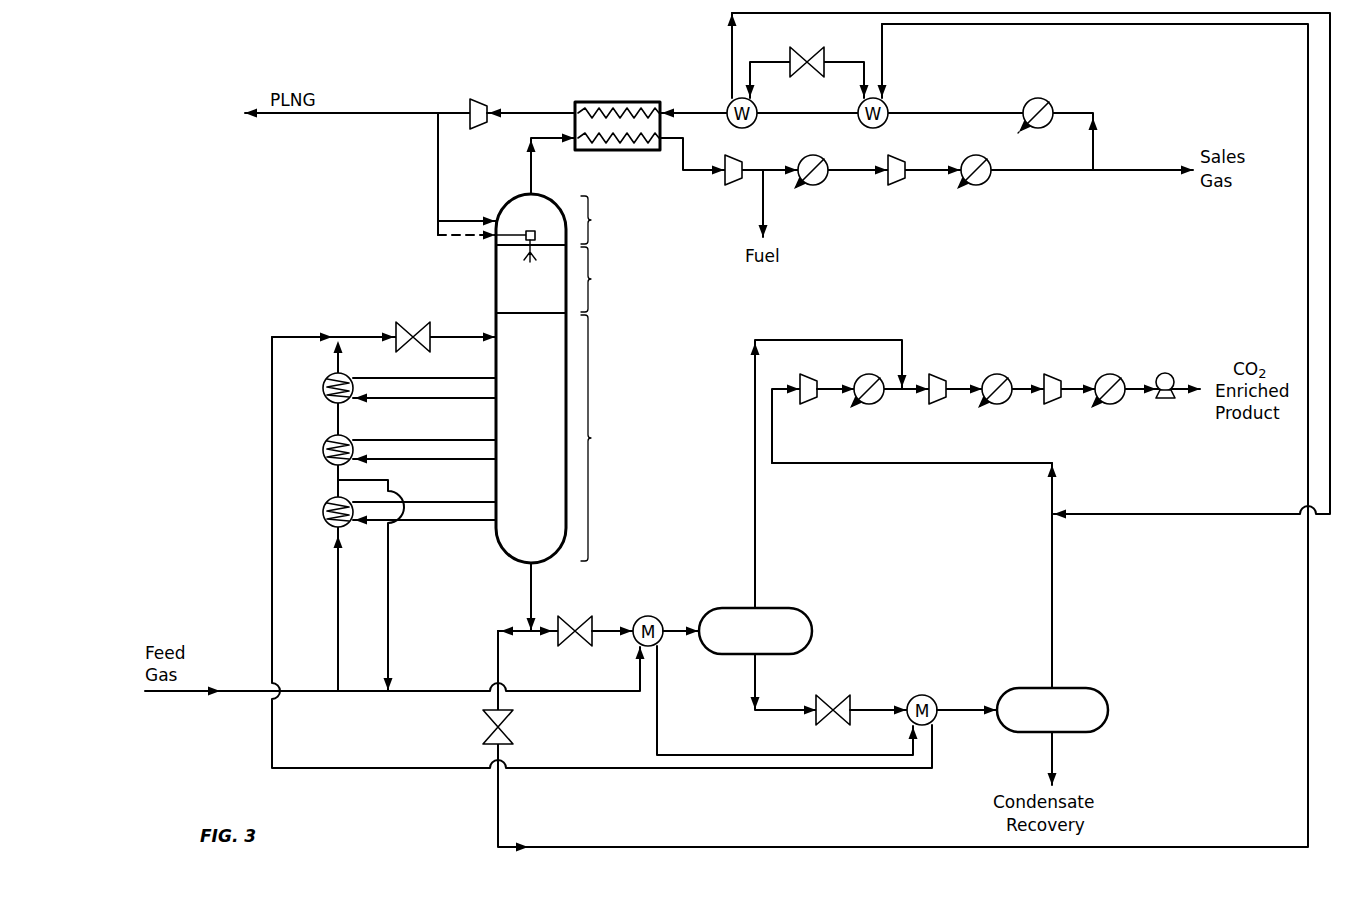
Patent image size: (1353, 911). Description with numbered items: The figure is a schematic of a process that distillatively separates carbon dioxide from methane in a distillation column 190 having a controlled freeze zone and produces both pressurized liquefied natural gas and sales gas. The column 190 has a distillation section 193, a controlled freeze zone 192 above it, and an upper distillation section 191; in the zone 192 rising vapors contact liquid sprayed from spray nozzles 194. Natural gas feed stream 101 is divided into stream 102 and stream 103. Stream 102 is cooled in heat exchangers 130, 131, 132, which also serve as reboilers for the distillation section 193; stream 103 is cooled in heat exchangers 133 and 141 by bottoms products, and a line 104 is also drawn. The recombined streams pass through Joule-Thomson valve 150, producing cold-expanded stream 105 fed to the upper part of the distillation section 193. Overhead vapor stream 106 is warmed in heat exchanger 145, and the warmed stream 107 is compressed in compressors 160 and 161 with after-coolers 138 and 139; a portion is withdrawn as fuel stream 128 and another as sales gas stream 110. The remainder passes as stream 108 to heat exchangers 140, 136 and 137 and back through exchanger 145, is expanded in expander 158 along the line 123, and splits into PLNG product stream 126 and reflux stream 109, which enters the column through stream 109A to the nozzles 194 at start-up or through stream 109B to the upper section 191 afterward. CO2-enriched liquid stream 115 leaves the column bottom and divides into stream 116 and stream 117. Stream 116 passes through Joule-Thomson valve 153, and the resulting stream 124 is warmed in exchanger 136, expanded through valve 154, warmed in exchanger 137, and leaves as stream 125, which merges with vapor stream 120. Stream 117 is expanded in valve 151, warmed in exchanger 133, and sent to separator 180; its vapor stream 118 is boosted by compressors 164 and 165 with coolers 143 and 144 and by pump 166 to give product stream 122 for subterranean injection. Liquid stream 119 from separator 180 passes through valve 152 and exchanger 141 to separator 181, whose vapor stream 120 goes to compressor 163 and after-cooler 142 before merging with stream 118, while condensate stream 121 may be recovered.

The natural gas feed stream 101 is at (188, 700).
The feed stream portion 102 is at (336, 602).
The feed stream portion 103 is at (356, 700).
The bypass stream 104 is at (394, 577).
The cold-expanded stream 105 is at (440, 336).
The overhead vapor stream 106 is at (528, 182).
The warmed vapor stream 107 is at (682, 158).
The recycle stream 108 is at (1071, 110).
The reflux stream 109 is at (428, 170).
The start-up reflux stream 109A is at (448, 228).
The upper section reflux stream 109B is at (448, 220).
The sales gas stream 110 is at (1116, 162).
The CO2-enriched liquid product stream 115 is at (526, 601).
The bottoms stream portion 116 is at (509, 630).
The bottoms stream portion 117 is at (549, 637).
The separator vapor stream 118 is at (748, 482).
The separator liquid stream 119 is at (748, 667).
The separator vapor stream 120 is at (1058, 584).
The condensate stream 121 is at (1058, 762).
The product stream 122 is at (1178, 398).
The recycle gas stream 123 is at (702, 112).
The expanded bottoms stream 124 is at (494, 816).
The warmed bottoms stream 125 is at (1176, 516).
The PLNG product stream 126 is at (376, 110).
The fuel stream 128 is at (770, 202).
The heat exchanger 130 is at (326, 505).
The heat exchanger 131 is at (326, 442).
The heat exchanger 132 is at (326, 380).
The heat exchanger 133 is at (636, 615).
The heat exchanger 136 is at (888, 128).
The heat exchanger 137 is at (752, 128).
The after-cooler 138 is at (825, 186).
The after-cooler 139 is at (990, 186).
The heat exchanger 140 is at (1046, 131).
The heat exchanger 141 is at (913, 690).
The after-cooler 142 is at (882, 410).
The cooler 143 is at (1007, 410).
The cooler 144 is at (1122, 410).
The heat exchanger 145 is at (598, 102).
The Joule-Thomson valve 150 is at (404, 350).
The expansion valve 151 is at (576, 615).
The expansion valve 152 is at (831, 690).
The Joule-Thomson valve 153 is at (476, 719).
The Joule-Thomson valve 154 is at (797, 74).
The expander 158 is at (486, 105).
The compressor 160 is at (738, 182).
The compressor 161 is at (900, 186).
The compressor 163 is at (810, 377).
The compressor 164 is at (940, 377).
The compressor 165 is at (1053, 377).
The pump 166 is at (1170, 376).
The separator 180 is at (771, 607).
The separator 181 is at (1071, 685).
The distillation column 190 is at (495, 372).
The upper distillation section 191 is at (604, 220).
The controlled freeze zone 192 is at (604, 279).
The distillation section 193 is at (603, 438).
The spray nozzle 194 is at (510, 260).